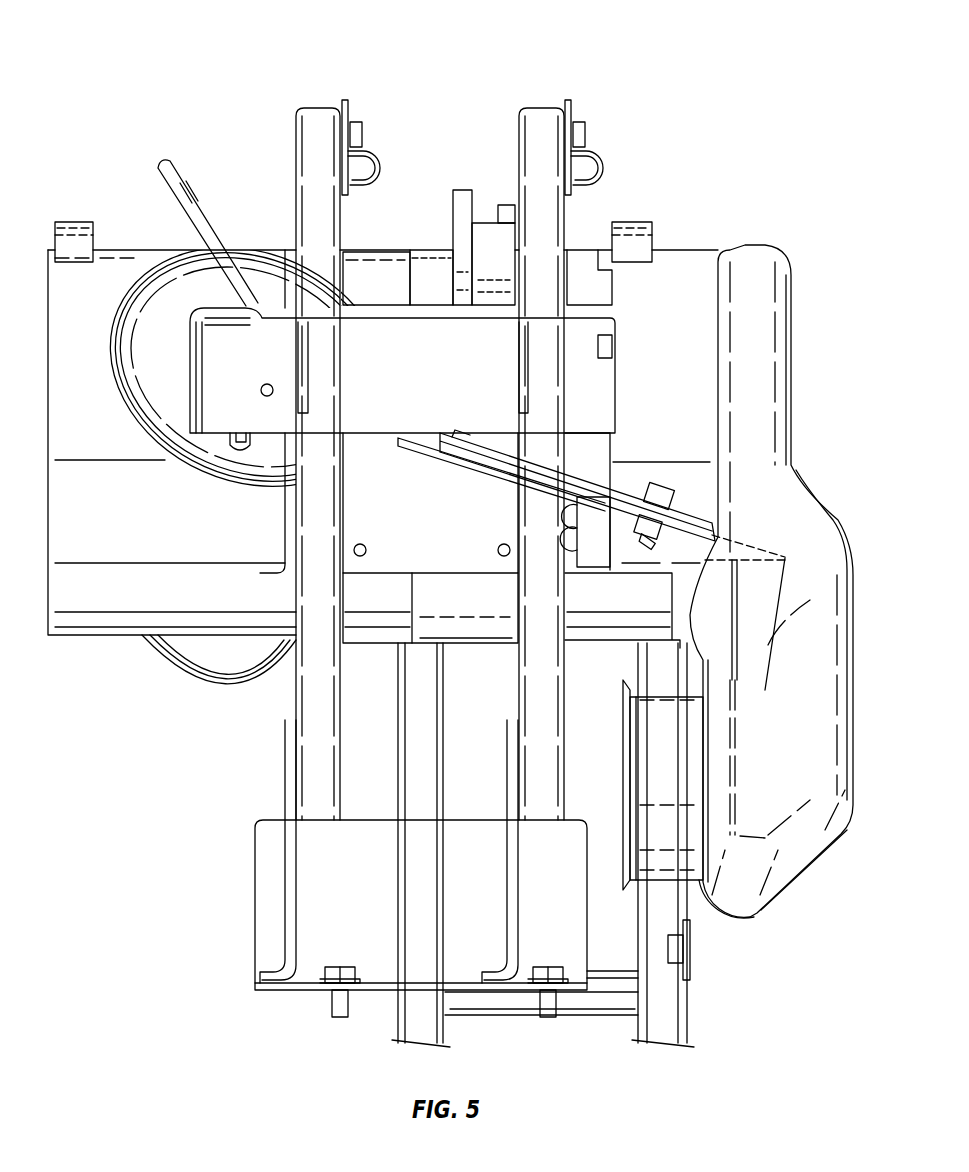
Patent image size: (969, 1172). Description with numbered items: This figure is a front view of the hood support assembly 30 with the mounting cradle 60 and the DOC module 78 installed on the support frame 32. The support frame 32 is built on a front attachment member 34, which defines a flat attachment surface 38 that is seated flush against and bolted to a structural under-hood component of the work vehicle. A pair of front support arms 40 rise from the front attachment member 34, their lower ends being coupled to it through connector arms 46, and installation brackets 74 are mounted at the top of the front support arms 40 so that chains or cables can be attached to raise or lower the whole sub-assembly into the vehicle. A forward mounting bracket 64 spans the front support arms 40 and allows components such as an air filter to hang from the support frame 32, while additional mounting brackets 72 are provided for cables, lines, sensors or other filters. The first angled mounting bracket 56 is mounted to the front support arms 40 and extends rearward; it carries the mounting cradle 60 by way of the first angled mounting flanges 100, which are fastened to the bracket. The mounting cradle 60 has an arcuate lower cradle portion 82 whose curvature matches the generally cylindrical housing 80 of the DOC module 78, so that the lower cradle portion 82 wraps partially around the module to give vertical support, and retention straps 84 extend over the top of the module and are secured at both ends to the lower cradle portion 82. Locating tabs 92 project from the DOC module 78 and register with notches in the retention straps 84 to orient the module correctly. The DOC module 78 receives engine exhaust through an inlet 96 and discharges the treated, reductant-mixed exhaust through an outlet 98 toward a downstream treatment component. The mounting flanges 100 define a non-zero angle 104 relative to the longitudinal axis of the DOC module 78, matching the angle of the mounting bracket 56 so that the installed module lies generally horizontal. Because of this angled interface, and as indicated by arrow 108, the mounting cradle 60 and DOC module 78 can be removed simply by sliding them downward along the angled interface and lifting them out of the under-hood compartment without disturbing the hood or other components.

The hood support assembly 30 is at (130, 80).
The support frame 32 is at (240, 125).
The front attachment member 34 is at (268, 935).
The attachment surface 38 is at (272, 990).
The front support arms 40 is at (315, 701).
The connector arms 46 is at (283, 858).
The first angled mounting bracket 56 is at (600, 498).
The mounting cradle 60 is at (433, 619).
The forward mounting bracket 64 is at (220, 365).
The additional mounting brackets 72 is at (196, 210).
The installation brackets 74 is at (350, 100).
The DOC module 78 is at (769, 414).
The housing 80 is at (97, 516).
The lower cradle portion 82 is at (604, 636).
The retention straps 84 is at (432, 262).
The locating tabs 92 is at (78, 225).
The inlet 96 is at (618, 865).
The outlet 98 is at (232, 683).
The first angled mounting flanges 100 is at (712, 514).
The angle 104 is at (720, 561).
The arrow 108 is at (884, 591).